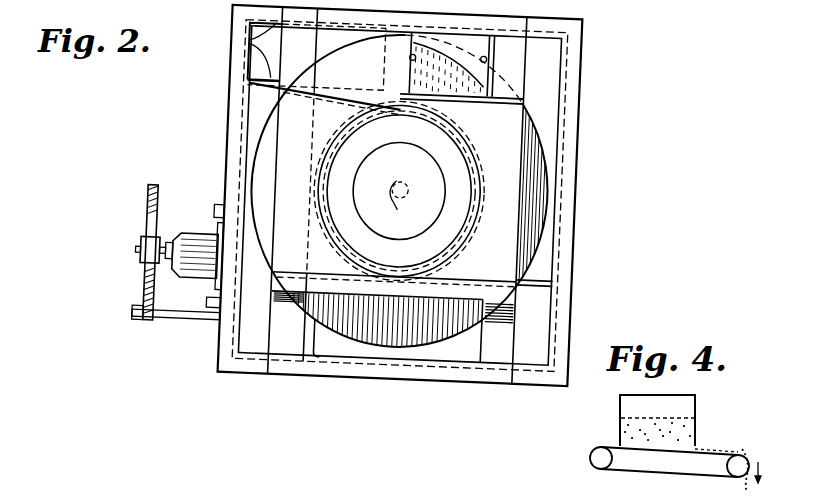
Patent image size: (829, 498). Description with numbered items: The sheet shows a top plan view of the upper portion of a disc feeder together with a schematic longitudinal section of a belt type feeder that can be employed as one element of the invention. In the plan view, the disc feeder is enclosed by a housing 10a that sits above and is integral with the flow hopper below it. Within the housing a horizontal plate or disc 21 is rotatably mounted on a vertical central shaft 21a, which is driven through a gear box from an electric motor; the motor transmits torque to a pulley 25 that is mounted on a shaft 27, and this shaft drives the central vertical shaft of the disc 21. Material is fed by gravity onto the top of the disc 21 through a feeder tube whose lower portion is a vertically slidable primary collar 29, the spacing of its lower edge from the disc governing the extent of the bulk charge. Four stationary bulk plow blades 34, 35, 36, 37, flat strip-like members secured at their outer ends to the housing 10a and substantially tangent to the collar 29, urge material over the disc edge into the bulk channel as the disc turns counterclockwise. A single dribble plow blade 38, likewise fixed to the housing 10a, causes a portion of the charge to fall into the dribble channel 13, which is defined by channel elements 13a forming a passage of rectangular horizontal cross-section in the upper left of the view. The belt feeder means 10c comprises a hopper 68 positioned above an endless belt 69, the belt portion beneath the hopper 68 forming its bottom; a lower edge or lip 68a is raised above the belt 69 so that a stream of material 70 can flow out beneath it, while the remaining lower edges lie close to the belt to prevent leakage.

In FIG. 2, the housing 10a is at (560, 210).
In FIG. 2, the dribble channel 13 is at (248, 62).
In FIG. 2, the channel elements 13a is at (248, 40).
In FIG. 2, the disc 21 is at (540, 173).
In FIG. 2, the central shaft 21a is at (402, 199).
In FIG. 2, the pulley 25 is at (148, 205).
In FIG. 2, the shaft 27 is at (140, 252).
In FIG. 2, the primary collar 29 is at (480, 234).
In FIG. 2, the bulk plow blade 34 is at (326, 343).
In FIG. 2, the bulk plow blade 35 is at (540, 289).
In FIG. 2, the bulk plow blade 36 is at (491, 62).
In FIG. 2, the bulk plow blade 37 is at (413, 61).
In FIG. 2, the dribble plow blade 38 is at (320, 112).
In FIG. 4, the belt feeder means 10c is at (678, 444).
In FIG. 4, the hopper 68 is at (620, 420).
In FIG. 4, the lip 68a is at (693, 445).
In FIG. 4, the endless belt 69 is at (636, 470).
In FIG. 4, the stream of material 70 is at (749, 452).